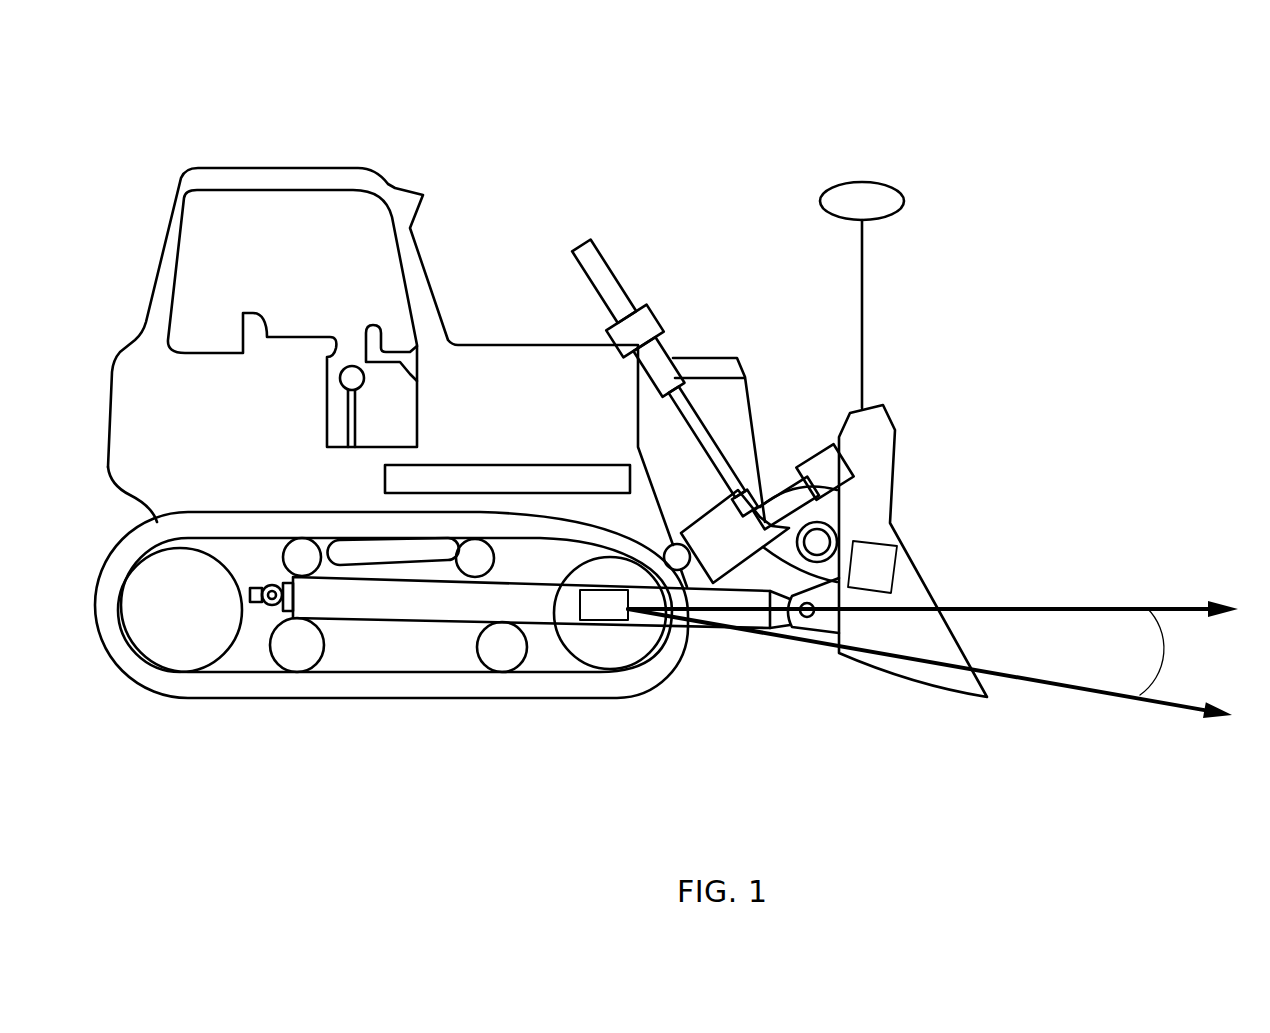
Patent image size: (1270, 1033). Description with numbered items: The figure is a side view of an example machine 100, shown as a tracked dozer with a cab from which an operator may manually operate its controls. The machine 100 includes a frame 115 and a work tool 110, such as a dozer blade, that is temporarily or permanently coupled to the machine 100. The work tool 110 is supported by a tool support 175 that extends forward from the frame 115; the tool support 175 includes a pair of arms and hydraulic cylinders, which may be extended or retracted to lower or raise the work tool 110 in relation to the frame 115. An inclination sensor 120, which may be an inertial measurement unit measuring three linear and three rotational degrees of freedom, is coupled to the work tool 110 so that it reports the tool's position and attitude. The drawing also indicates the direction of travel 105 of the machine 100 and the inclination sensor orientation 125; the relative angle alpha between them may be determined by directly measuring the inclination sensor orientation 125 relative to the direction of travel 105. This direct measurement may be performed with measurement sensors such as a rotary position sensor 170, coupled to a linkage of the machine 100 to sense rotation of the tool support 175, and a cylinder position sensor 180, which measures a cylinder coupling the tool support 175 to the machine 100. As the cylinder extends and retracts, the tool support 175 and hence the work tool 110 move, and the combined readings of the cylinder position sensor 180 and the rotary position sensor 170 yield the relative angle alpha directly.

The machine 100 is at (170, 88).
The direction of travel 105 is at (1168, 597).
The work tool 110 is at (893, 447).
The frame 115 is at (320, 491).
The inclination sensor 120 is at (854, 579).
The inclination sensor orientation 125 is at (1195, 754).
The rotary position sensor 170 is at (586, 618).
The tool support 175 is at (518, 613).
The cylinder position sensor 180 is at (610, 589).